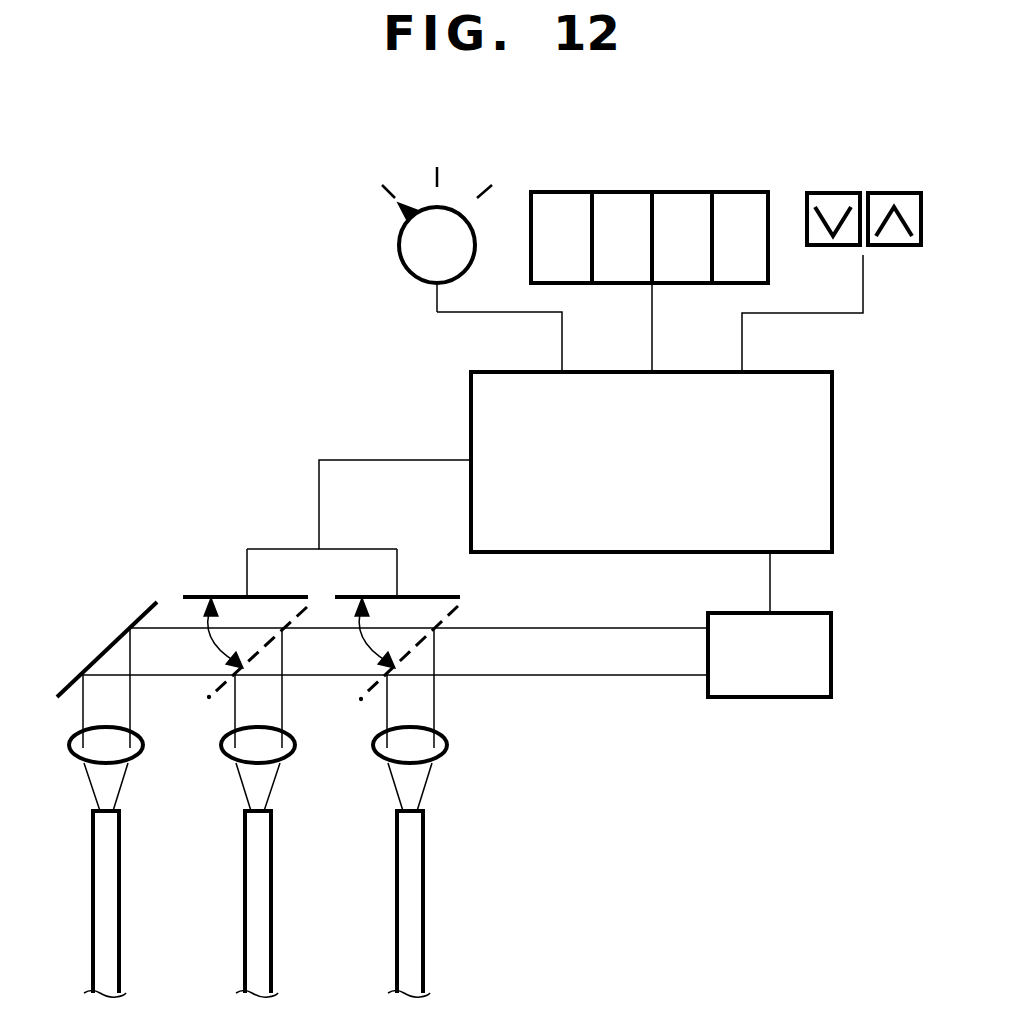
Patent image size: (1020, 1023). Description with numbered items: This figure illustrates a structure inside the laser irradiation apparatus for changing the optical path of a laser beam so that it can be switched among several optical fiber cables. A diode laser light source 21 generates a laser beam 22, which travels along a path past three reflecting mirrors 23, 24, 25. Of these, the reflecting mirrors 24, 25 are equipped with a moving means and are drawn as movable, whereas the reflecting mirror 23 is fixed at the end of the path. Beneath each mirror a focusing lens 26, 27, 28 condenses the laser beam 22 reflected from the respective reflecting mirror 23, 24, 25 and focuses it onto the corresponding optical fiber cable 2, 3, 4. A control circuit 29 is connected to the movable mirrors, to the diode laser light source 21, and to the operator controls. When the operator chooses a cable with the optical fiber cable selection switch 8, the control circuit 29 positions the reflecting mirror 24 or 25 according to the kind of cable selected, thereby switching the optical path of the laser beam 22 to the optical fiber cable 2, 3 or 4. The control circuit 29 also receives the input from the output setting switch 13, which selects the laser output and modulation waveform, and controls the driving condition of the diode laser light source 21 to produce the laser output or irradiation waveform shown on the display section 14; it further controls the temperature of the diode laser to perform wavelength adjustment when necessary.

The optical fiber cable 2 is at (107, 905).
The optical fiber cable 3 is at (259, 905).
The optical fiber cable 4 is at (411, 905).
The selection switch 8 is at (398, 246).
The output setting switch 13 is at (863, 192).
The display section 14 is at (652, 192).
The diode laser light source 21 is at (768, 697).
The laser beam 22 is at (612, 663).
The reflecting mirror 23 is at (106, 651).
The reflecting mirror 24 is at (272, 596).
The reflecting mirror 25 is at (422, 596).
The focusing lens 26 is at (143, 750).
The focusing lens 27 is at (295, 750).
The focusing lens 28 is at (447, 750).
The control circuit 29 is at (471, 413).